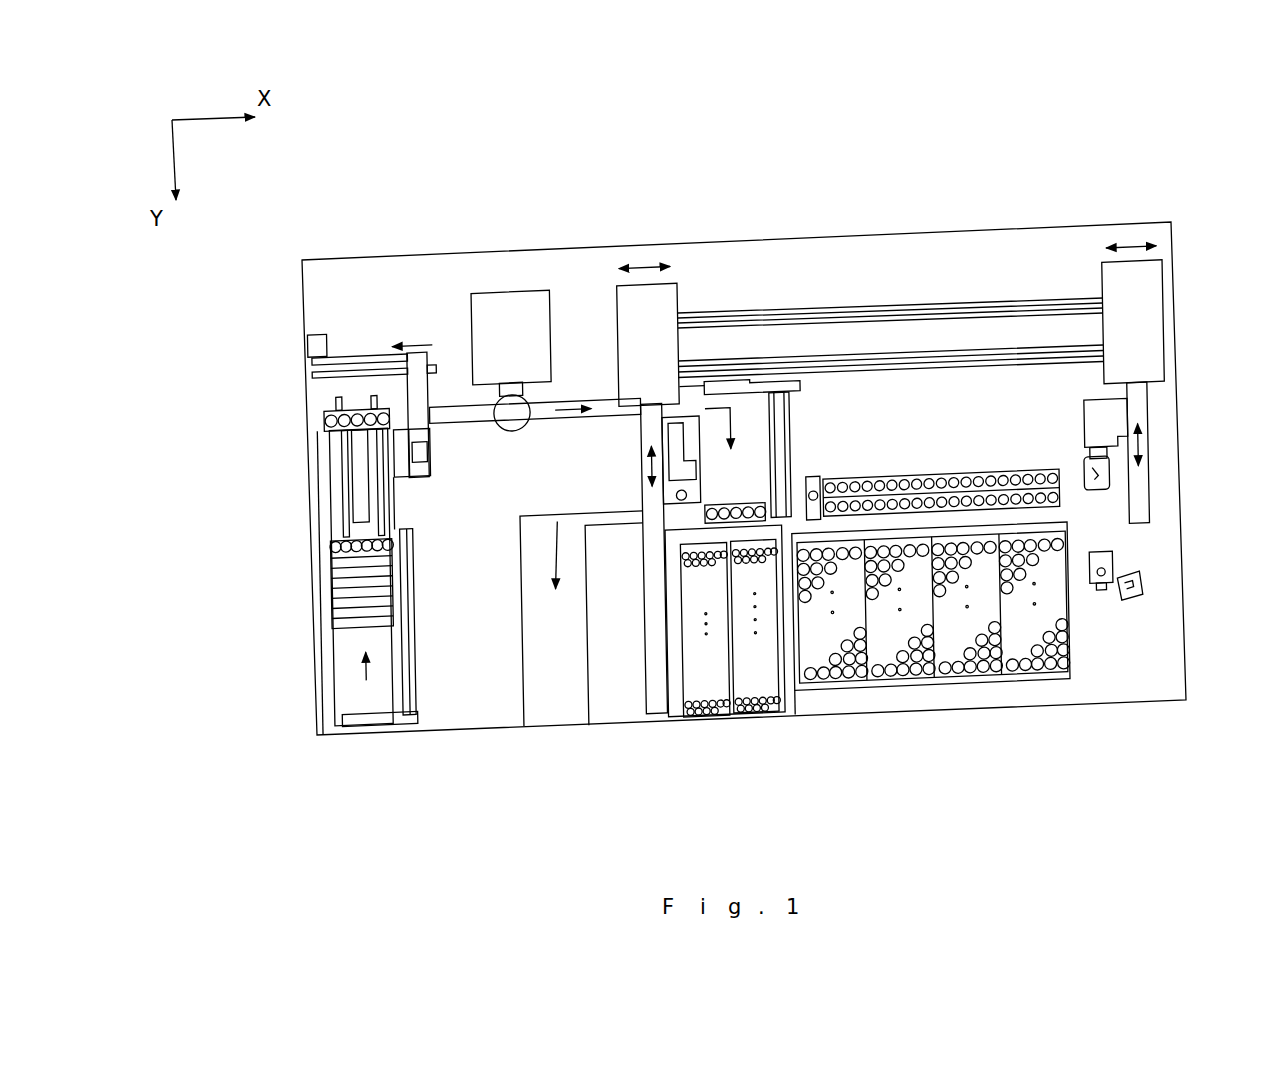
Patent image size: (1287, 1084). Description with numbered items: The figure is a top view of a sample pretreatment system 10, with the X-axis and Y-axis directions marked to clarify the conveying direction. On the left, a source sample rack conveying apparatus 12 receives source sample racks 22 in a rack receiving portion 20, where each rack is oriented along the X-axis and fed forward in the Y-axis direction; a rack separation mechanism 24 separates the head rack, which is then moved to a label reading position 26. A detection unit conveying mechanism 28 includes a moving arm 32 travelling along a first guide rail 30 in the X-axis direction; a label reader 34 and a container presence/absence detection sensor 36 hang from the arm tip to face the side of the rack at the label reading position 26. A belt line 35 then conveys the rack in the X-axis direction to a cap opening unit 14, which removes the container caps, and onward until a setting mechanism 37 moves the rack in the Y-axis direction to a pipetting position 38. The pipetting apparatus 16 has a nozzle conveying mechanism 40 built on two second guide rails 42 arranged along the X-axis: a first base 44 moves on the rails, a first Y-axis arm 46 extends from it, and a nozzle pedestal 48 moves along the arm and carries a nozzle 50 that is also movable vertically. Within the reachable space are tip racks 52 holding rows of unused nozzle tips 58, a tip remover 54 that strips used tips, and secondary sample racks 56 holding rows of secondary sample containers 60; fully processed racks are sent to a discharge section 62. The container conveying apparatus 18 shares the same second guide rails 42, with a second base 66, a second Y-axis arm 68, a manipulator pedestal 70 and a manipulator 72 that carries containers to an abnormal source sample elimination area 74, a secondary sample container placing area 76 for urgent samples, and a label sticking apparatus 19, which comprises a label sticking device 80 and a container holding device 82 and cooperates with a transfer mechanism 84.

The sample pretreatment system 10 is at (322, 765).
The source sample rack conveying apparatus 12 is at (468, 686).
The cap opening unit 14 is at (510, 288).
The pipetting apparatus 16 is at (786, 280).
The container conveying apparatus 18 is at (1090, 275).
The label sticking apparatus 19 is at (1207, 785).
The rack receiving portion 20 is at (345, 675).
The source sample rack 22 is at (338, 610).
The rack separation mechanism 24 is at (355, 470).
The label reading position 26 is at (328, 420).
The detection unit conveying mechanism 28 is at (370, 328).
The first guide rail 30 is at (363, 356).
The moving arm 32 is at (430, 432).
The label reader 34 is at (403, 478).
The belt line 35 is at (453, 415).
The container presence/absence detection sensor 36 is at (433, 456).
The setting mechanism 37 is at (792, 413).
The pipetting position 38 is at (737, 503).
The nozzle conveying mechanism 40 is at (695, 288).
The second guide rails 42 is at (885, 308).
The first base 44 is at (615, 312).
The first Y-axis arm 46 is at (650, 427).
The nozzle pedestal 48 is at (648, 467).
The nozzle 50 is at (662, 497).
The tip racks 52 is at (718, 656).
The tip remover 54 is at (808, 478).
The secondary sample racks 56 is at (830, 640).
The unused nozzle tips 58 is at (685, 728).
The secondary sample containers 60 is at (1060, 675).
The discharge section 62 is at (558, 700).
The second base 66 is at (1163, 312).
The second Y-axis arm 68 is at (1150, 443).
The manipulator pedestal 70 is at (1112, 415).
The manipulator 72 is at (1112, 483).
The abnormal source sample elimination area 74 is at (823, 480).
The secondary sample container placing area 76 is at (1062, 472).
The label sticking device 80 is at (1097, 592).
The container holding device 82 is at (1135, 600).
The transfer mechanism 84 is at (1140, 600).